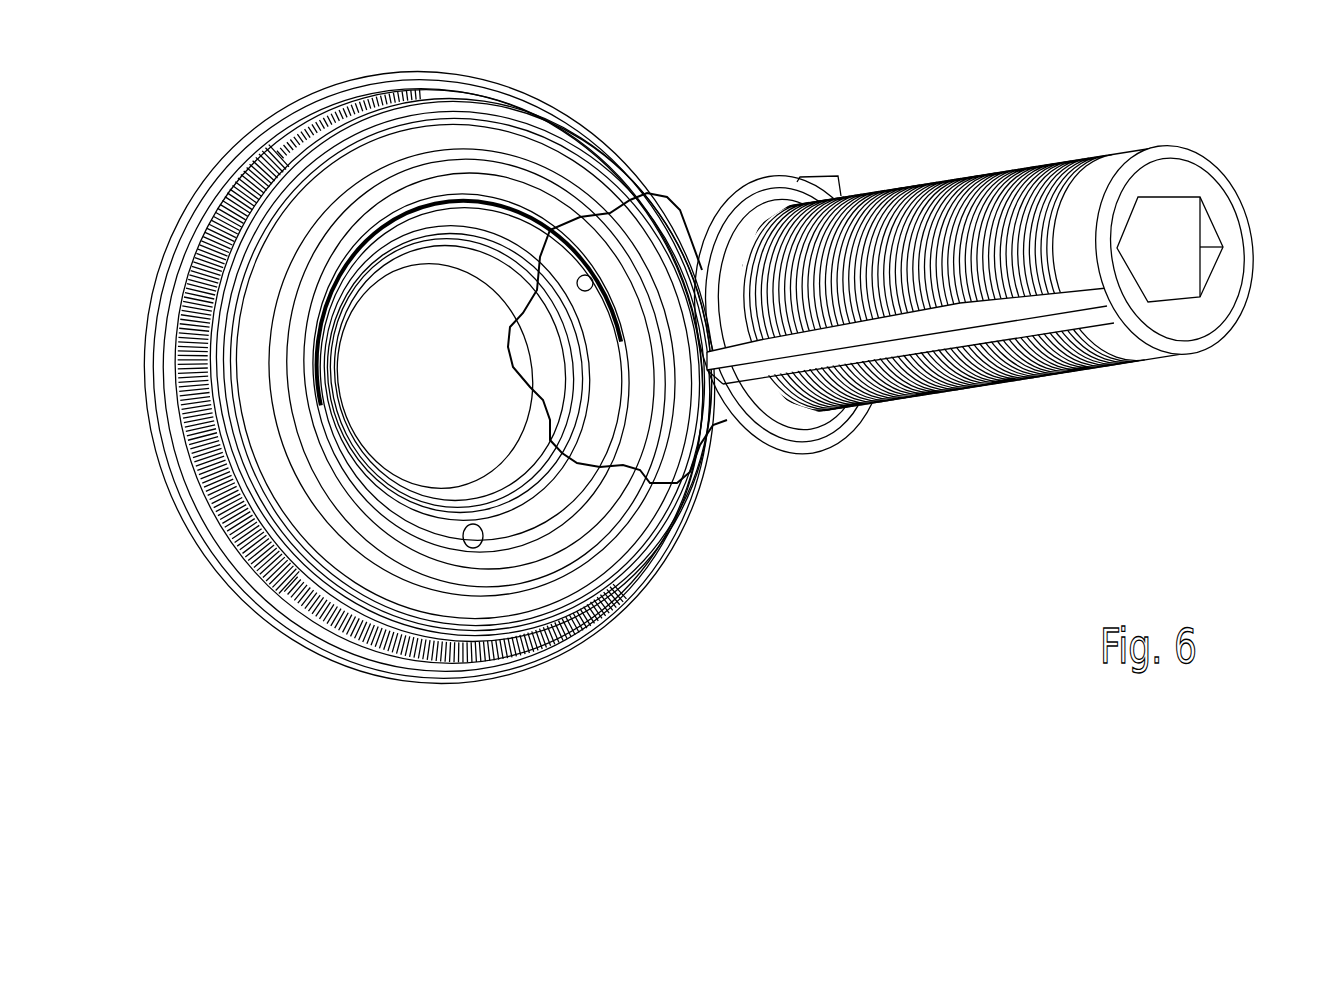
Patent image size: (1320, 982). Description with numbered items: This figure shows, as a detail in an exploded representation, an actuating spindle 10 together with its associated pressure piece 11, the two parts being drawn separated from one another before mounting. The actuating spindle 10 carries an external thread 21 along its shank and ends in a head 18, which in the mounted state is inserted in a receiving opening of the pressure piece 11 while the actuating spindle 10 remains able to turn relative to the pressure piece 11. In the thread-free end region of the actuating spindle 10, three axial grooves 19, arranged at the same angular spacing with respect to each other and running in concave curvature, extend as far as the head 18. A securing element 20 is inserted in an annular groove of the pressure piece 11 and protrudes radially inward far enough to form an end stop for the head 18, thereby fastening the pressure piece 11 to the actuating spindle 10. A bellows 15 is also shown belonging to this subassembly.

The actuating spindle 10 is at (990, 160).
The pressure piece 11 is at (296, 659).
The bellows 15 is at (337, 515).
The head 18 is at (830, 413).
The axial groove 19 is at (818, 178).
The securing element 20 is at (726, 420).
The external thread 21 is at (1077, 157).